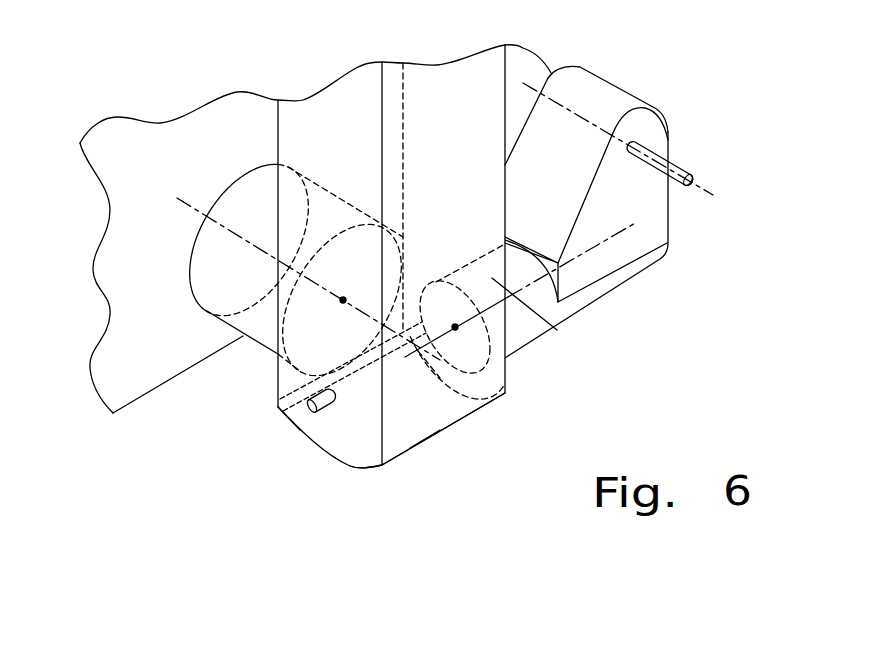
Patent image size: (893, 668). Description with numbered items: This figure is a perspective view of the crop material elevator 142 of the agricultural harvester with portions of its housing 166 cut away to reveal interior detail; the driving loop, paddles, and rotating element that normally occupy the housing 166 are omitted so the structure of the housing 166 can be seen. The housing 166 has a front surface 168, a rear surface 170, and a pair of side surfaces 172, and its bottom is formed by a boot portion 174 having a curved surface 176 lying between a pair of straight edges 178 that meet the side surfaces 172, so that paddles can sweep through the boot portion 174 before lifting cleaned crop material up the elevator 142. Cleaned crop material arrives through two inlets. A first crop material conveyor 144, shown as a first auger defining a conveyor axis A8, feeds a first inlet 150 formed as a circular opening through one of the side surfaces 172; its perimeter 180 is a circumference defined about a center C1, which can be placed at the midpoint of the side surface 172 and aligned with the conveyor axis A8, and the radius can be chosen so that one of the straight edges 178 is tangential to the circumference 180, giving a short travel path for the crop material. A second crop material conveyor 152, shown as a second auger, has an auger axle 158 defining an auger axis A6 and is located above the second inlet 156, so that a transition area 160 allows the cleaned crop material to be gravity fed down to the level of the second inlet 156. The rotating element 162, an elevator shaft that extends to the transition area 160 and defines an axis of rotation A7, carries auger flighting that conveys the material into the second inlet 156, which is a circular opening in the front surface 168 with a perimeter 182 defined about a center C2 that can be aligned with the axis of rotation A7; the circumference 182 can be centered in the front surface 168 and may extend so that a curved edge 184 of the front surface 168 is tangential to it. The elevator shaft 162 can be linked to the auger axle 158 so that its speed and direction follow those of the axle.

The crop material elevator 142 is at (478, 411).
The first crop material conveyor 144 is at (243, 343).
The first inlet 150 is at (342, 262).
The second crop material conveyor 152 is at (666, 104).
The second inlet 156 is at (451, 298).
The auger axle 158 is at (680, 163).
The transition area 160 is at (668, 220).
The rotating element (elevator shaft) 162 is at (320, 417).
The housing 166 is at (507, 131).
The front surface 168 is at (555, 330).
The rear surface 170 is at (358, 442).
The side surfaces 172 is at (277, 210).
The boot portion 174 is at (459, 397).
The curved surface 176 is at (368, 468).
The straight edges 178 is at (297, 404).
The perimeter (circumference) of first inlet 180 is at (321, 247).
The perimeter (circumference) of second inlet 182 is at (438, 283).
The curved edge 184 is at (433, 372).
The auger axis A6 is at (633, 140).
The axis of rotation A7 is at (521, 289).
The conveyor axis A8 is at (308, 279).
The center of first inlet C1 is at (343, 305).
The center of second inlet C2 is at (497, 364).